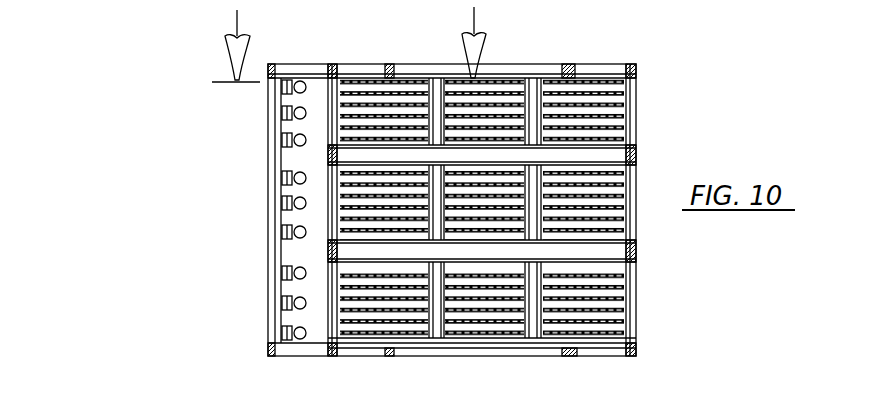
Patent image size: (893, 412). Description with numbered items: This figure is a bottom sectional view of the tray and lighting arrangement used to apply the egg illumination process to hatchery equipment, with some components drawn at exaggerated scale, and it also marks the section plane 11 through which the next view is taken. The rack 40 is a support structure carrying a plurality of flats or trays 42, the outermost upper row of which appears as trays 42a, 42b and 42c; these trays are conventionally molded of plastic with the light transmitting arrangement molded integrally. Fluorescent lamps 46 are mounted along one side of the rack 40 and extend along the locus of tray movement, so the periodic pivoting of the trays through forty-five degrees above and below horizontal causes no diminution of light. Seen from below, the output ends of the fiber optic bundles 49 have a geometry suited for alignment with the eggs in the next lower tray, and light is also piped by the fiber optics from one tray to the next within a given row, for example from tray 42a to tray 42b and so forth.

The section plane 11— 11 is at (218, 14).
The rack 40 is at (672, 121).
The trays 42 is at (485, 245).
The tray 42a is at (412, 338).
The tray 42b is at (500, 338).
The tray 42c is at (597, 338).
The fluorescent lamps 46 is at (282, 117).
The fiber optic bundles 49 is at (625, 85).